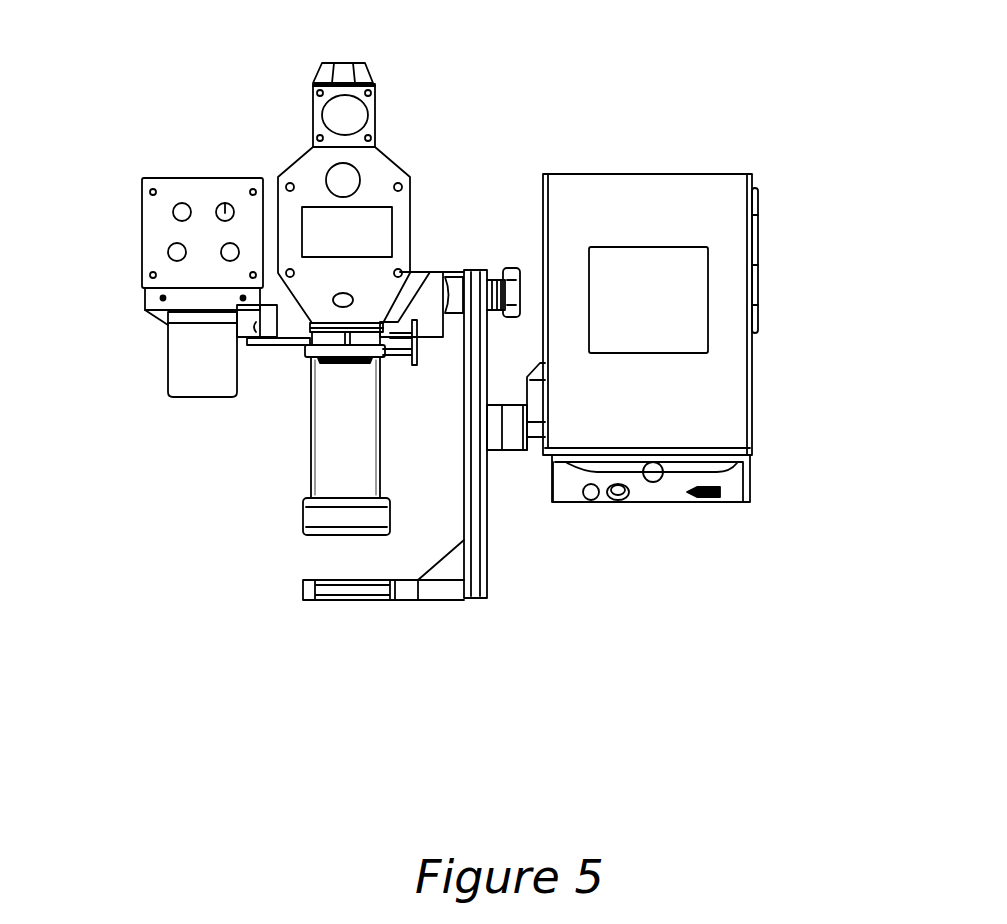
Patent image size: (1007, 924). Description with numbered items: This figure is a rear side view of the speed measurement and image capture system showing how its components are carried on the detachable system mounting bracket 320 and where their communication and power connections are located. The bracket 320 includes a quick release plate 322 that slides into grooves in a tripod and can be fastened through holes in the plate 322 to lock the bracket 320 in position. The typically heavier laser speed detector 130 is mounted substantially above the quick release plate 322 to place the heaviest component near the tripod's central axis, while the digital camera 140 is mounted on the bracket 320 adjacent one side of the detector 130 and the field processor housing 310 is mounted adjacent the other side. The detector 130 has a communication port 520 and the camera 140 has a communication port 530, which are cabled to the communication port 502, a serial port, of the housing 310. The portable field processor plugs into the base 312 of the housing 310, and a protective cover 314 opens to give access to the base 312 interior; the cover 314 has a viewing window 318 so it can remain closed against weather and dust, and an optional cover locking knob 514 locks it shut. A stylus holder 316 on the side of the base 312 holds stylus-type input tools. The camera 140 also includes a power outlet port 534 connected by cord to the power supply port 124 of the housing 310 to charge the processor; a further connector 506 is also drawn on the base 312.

The field processor housing 310 is at (628, 128).
The protective cover 314 is at (720, 175).
The stylus holder 316 is at (757, 255).
The viewing window 318 is at (708, 290).
The base 312 is at (750, 477).
The cover locking knob 514 is at (660, 462).
The power supply port 124 is at (593, 500).
The connector 506 is at (630, 490).
The communication port 502 is at (712, 500).
The laser speed detector 130 is at (397, 160).
The communication port 520 is at (334, 303).
The digital camera 140 is at (142, 215).
The power outlet port 534 is at (181, 202).
The communication port 530 is at (221, 254).
The system mounting bracket 320 is at (503, 538).
The quick release plate 322 is at (347, 600).